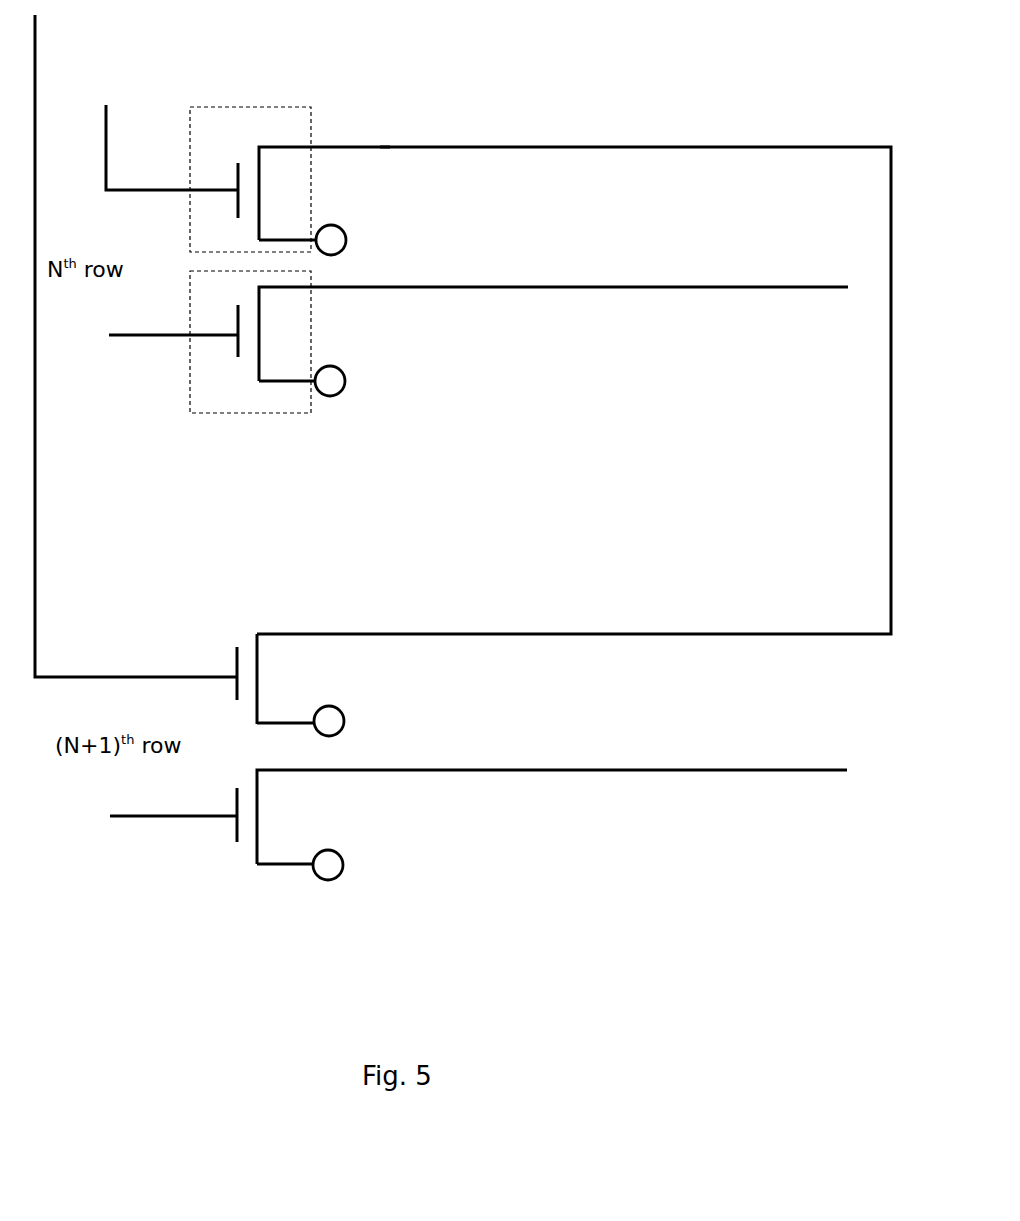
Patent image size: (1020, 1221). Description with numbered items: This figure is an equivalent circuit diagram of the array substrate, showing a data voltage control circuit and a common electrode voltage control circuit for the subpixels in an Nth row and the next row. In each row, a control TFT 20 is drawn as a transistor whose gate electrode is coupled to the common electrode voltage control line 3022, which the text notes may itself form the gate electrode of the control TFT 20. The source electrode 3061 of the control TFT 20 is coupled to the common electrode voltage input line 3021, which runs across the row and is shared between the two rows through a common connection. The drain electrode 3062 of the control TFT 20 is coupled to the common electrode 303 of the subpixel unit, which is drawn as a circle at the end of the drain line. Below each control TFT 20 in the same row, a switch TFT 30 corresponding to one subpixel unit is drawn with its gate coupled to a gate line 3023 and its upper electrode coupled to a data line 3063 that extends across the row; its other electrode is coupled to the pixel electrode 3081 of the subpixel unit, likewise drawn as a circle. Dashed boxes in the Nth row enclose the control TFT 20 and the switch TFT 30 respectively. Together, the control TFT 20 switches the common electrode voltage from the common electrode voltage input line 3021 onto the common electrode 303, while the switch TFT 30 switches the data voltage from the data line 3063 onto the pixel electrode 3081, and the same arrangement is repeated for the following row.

The control TFT 20 is at (259, 107).
The switch TFT 30 is at (263, 413).
The common electrode voltage input line 3021 is at (382, 146).
The common electrode voltage control line 3022 is at (135, 190).
The gate line 3023 is at (148, 337).
The source electrode 3061 is at (272, 146).
The drain electrode 3062 is at (287, 240).
The data line 3063 is at (540, 285).
The common electrode 303 is at (347, 245).
The pixel electrode 3081 is at (347, 382).